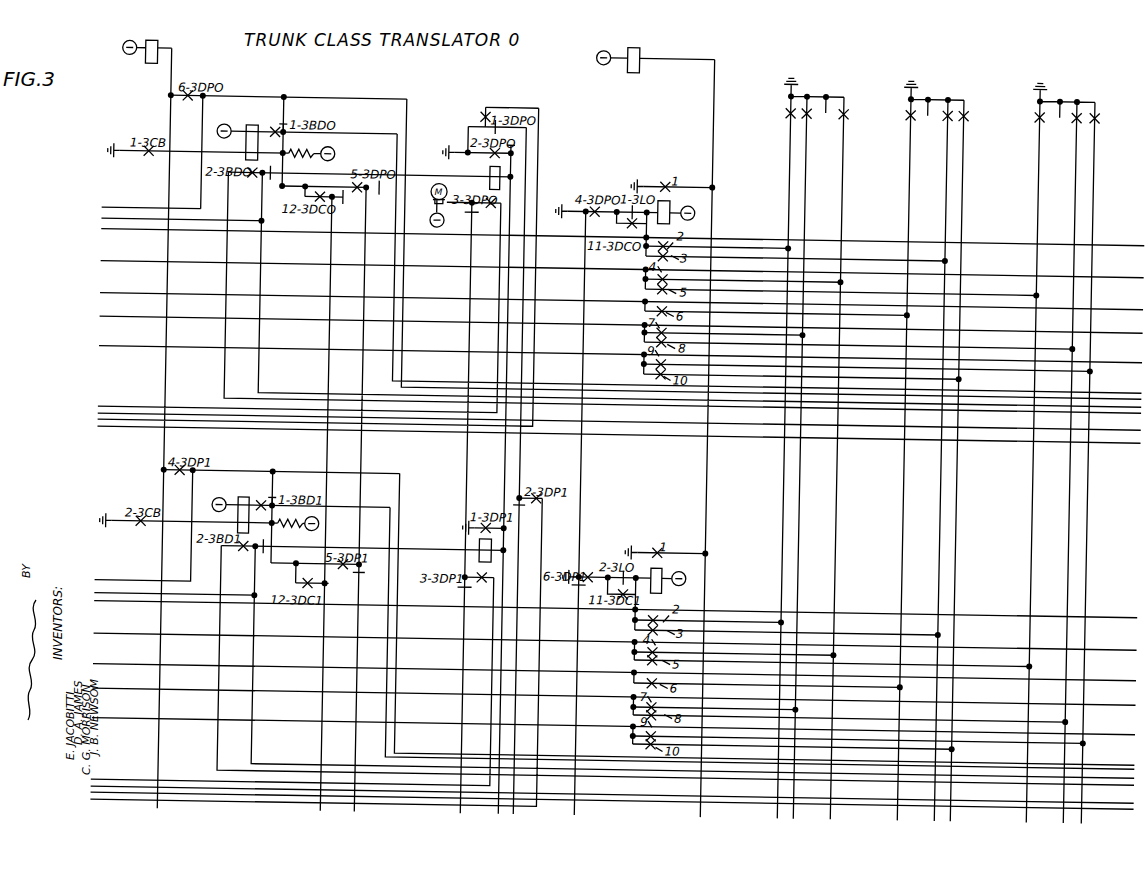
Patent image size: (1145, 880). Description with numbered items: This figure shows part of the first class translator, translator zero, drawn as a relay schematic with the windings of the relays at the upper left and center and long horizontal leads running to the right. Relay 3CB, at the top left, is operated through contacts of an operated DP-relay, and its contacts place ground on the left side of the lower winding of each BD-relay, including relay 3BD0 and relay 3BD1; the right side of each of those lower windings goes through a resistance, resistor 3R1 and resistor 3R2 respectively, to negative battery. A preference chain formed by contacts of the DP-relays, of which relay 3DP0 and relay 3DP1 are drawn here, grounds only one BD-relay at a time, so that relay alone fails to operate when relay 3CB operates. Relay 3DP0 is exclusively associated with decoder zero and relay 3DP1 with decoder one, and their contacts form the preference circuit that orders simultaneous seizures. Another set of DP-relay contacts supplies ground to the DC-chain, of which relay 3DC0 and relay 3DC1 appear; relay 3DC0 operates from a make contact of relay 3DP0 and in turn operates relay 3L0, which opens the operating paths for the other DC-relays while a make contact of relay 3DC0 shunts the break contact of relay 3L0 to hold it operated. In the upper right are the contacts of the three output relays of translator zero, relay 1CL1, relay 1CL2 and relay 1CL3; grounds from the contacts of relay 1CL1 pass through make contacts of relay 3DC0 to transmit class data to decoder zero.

The relay 3CB is at (145, 42).
The relay 3L0 is at (620, 56).
The relay 3BD0 is at (243, 134).
The resistor 3R1 is at (312, 149).
The relay 3DP0 is at (471, 177).
The relay 3DC0 is at (684, 207).
The relay 3BD1 is at (232, 509).
The resistor 3R2 is at (298, 530).
The relay 3DP1 is at (484, 546).
The relay 3DC1 is at (676, 576).
The relay 1CL1 is at (793, 449).
The relay 1CL2 is at (913, 451).
The relay 1CL3 is at (1043, 453).